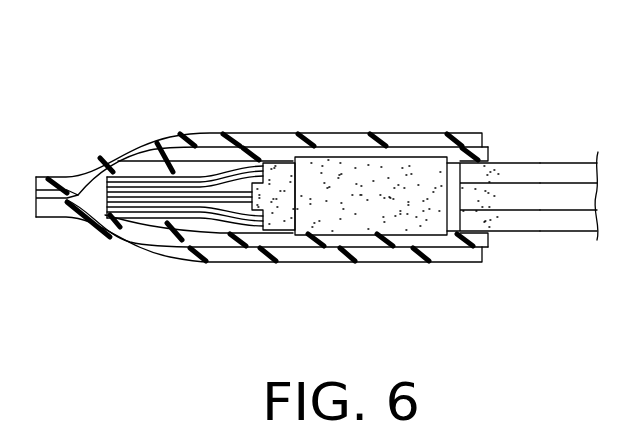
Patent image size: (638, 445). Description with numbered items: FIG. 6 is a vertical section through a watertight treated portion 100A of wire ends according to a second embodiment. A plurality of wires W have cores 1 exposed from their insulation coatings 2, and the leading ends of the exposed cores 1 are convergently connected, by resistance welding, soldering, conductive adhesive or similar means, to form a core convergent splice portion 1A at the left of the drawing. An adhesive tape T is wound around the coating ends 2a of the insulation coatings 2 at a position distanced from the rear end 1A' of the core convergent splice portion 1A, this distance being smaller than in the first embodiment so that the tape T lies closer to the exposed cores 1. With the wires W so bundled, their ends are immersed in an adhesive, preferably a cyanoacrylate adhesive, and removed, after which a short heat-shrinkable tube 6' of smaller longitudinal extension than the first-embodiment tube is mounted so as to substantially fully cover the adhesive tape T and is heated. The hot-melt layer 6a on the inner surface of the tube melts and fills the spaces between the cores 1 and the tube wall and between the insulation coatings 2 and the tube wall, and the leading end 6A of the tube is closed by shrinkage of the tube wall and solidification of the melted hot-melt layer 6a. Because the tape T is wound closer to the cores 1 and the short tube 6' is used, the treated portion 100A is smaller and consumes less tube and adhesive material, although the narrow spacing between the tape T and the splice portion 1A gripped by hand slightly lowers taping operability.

The watertight treated portion of wire ends 100A is at (395, 87).
The cores 1 is at (222, 165).
The core convergent splice portion 1A is at (185, 118).
The rear end of core convergent splice portion 1A' is at (185, 280).
The short heat-shrinkable tube 6' is at (277, 144).
The hot-melt layer 6a is at (231, 238).
The leading end of heat-shrinkable tube 6A is at (55, 218).
The adhesive tape T is at (322, 170).
The insulation coatings 2 is at (530, 197).
The crimped portion 2a is at (278, 200).
The wires W is at (563, 160).